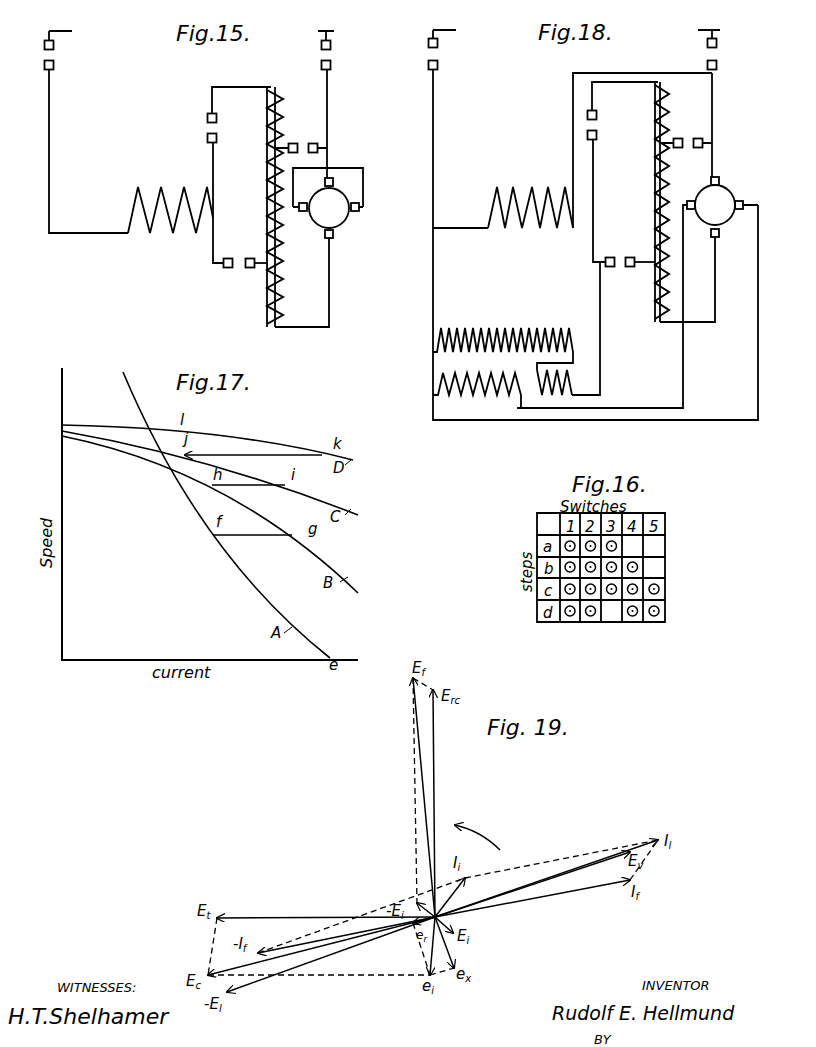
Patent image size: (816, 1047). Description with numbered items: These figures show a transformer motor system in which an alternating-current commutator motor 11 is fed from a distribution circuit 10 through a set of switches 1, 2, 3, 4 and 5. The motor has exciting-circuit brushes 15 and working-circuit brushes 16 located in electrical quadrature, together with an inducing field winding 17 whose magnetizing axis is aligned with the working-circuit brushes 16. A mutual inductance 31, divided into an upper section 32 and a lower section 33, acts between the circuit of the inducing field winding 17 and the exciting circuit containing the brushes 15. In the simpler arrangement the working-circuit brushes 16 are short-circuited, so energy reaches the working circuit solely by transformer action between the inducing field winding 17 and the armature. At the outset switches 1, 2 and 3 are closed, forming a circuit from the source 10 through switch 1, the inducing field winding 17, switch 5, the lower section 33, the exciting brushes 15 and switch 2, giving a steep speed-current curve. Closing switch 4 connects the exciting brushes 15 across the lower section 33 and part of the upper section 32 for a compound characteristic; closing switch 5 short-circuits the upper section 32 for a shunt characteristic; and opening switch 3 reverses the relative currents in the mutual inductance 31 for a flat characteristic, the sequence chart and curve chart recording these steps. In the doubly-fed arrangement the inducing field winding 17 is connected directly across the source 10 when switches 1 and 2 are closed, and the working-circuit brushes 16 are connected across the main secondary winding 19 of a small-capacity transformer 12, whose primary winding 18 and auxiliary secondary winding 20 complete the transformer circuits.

In FIG. 15, the switch 1 is at (44, 53).
In FIG. 18, the switch 1 is at (428, 53).
In FIG. 15, the switch 2 is at (332, 55).
In FIG. 18, the switch 2 is at (719, 52).
In FIG. 15, the switch 3 is at (244, 268).
In FIG. 18, the switch 3 is at (623, 268).
In FIG. 15, the switch 4 is at (301, 145).
In FIG. 18, the switch 4 is at (684, 143).
In FIG. 15, the switch 5 is at (206, 129).
In FIG. 18, the switch 5 is at (598, 127).
In FIG. 15, the distribution circuit 10 is at (191, 38).
In FIG. 18, the distribution circuit 10 is at (576, 33).
In FIG. 15, the alternating-current commutator motor 11 is at (356, 189).
In FIG. 18, the alternating-current commutator motor 11 is at (753, 186).
In FIG. 18, the transformer 12 is at (424, 377).
In FIG. 15, the exciting-circuit brushes 15 is at (318, 240).
In FIG. 18, the exciting-circuit brushes 15 is at (710, 181).
In FIG. 15, the working-circuit brushes 16 is at (360, 212).
In FIG. 18, the working-circuit brushes 16 is at (688, 204).
In FIG. 15, the inducing field winding 17 is at (152, 197).
In FIG. 18, the inducing field winding 17 is at (517, 195).
In FIG. 18, the primary winding 18 is at (484, 338).
In FIG. 18, the main secondary winding 19 is at (461, 378).
In FIG. 18, the auxiliary secondary winding 20 is at (570, 379).
In FIG. 15, the mutual inductance 31 is at (243, 190).
In FIG. 18, the mutual inductance 31 is at (629, 184).
In FIG. 15, the upper section 32 is at (264, 138).
In FIG. 18, the upper section 32 is at (652, 115).
In FIG. 15, the lower section 33 is at (267, 320).
In FIG. 18, the lower section 33 is at (652, 302).